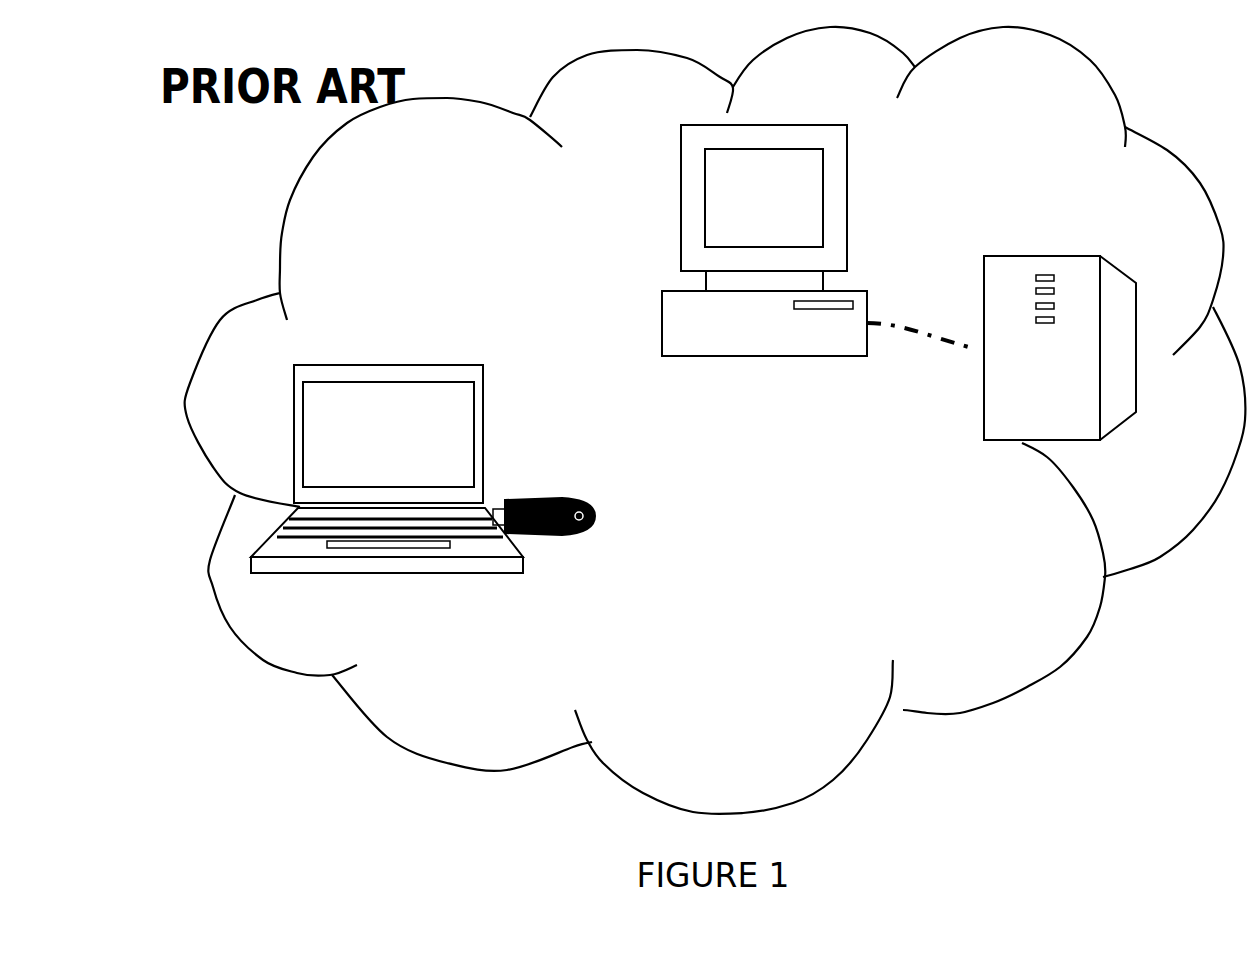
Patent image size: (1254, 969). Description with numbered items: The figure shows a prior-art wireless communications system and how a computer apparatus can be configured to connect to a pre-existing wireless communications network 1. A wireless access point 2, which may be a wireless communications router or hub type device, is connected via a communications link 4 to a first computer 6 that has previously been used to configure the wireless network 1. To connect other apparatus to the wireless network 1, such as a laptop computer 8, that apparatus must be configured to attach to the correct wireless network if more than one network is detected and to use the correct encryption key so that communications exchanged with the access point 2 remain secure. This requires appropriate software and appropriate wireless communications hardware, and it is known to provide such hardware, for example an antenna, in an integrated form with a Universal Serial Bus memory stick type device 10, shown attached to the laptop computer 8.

The wireless communications network 1 is at (598, 82).
The wireless access point 2 is at (1103, 266).
The communications link 4 is at (908, 318).
The first computer 6 is at (845, 202).
The laptop computer 8 is at (435, 363).
The Universal Serial Bus memory stick type device 10 is at (565, 538).